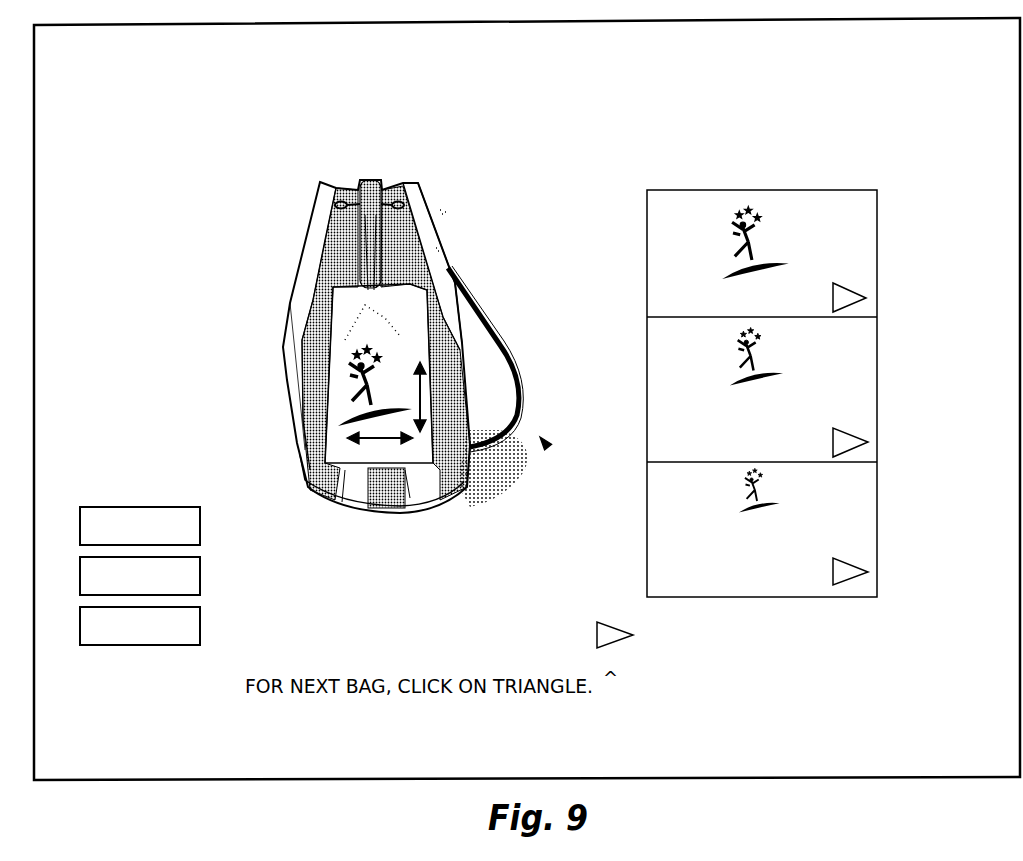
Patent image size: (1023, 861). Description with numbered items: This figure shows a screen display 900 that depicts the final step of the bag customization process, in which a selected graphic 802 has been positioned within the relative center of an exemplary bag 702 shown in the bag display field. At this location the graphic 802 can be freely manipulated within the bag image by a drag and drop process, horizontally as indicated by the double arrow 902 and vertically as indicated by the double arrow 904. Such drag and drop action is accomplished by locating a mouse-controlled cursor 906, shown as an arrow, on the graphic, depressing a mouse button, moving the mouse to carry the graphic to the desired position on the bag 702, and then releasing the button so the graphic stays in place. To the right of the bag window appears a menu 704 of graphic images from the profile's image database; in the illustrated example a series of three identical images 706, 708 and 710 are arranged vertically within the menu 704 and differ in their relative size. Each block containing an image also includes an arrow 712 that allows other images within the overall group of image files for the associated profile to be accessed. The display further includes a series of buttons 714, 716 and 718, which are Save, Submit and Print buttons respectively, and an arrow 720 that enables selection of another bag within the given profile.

The bag 702 is at (438, 380).
The menu 704 is at (891, 204).
The image 706 is at (852, 233).
The image 708 is at (862, 376).
The image 710 is at (863, 509).
The arrow 712 is at (866, 298).
The Save button 714 is at (201, 523).
The Submit button 716 is at (201, 573).
The Print button 718 is at (201, 623).
The arrow 720 is at (633, 635).
The graphic 802 is at (399, 352).
The screen display 900 is at (527, 399).
The double arrow 902 is at (380, 442).
The double arrow 904 is at (425, 376).
The cursor 906 is at (548, 450).